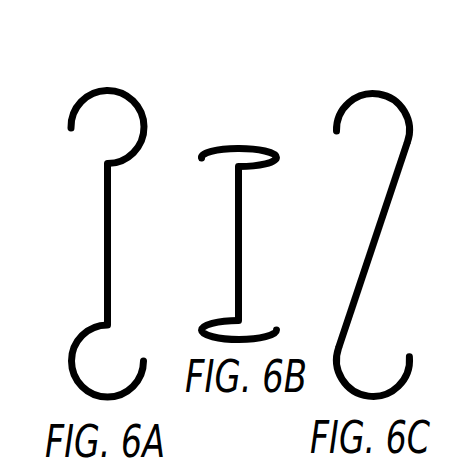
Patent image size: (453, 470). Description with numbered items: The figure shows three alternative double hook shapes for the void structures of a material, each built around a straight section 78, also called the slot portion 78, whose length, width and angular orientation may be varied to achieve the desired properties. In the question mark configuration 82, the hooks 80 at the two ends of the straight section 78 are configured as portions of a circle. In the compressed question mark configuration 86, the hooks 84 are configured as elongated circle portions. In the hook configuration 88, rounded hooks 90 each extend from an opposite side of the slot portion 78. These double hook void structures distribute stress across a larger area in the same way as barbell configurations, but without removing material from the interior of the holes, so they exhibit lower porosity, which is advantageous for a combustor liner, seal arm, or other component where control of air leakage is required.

In FIG. 6A, the straight section 78 is at (105, 242).
In FIG. 6B, the straight section 78 is at (242, 250).
In FIG. 6C, the straight section 78 is at (379, 240).
In FIG. 6A, the hooks 80 is at (76, 99).
In FIG. 6A, the question mark configuration 82 is at (140, 83).
In FIG. 6B, the hooks 84 is at (222, 146).
In FIG. 6B, the compressed question mark configuration 86 is at (256, 105).
In FIG. 6C, the hook configuration 88 is at (391, 76).
In FIG. 6C, the rounded hooks 90 is at (353, 94).